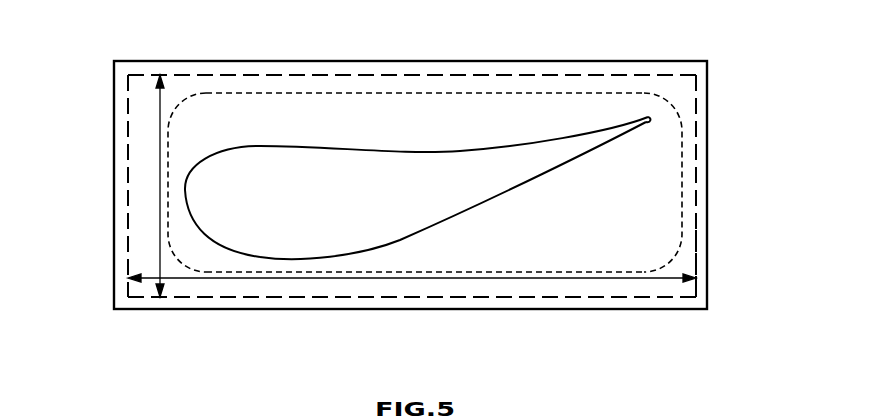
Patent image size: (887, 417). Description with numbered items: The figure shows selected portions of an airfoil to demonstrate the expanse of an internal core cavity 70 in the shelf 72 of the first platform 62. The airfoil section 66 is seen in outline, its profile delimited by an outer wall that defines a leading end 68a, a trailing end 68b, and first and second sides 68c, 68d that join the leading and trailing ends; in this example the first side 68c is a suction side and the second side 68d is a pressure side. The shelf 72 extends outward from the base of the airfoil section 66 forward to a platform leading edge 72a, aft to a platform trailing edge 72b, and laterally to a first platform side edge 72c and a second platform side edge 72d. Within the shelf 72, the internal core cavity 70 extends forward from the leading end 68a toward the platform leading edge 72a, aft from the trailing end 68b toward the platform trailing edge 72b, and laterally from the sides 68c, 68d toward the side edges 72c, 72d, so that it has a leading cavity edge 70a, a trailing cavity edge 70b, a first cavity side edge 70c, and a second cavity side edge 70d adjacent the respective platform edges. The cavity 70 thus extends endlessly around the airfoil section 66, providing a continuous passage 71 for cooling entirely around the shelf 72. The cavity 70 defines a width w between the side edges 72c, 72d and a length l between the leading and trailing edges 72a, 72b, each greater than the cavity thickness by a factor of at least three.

The first platform 62 is at (170, 309).
The airfoil section 66 is at (355, 234).
The leading end 68a is at (185, 190).
The trailing end 68b is at (648, 121).
The first side 68c is at (327, 258).
The second side 68d is at (337, 146).
The internal core cavity 70 is at (403, 187).
The leading cavity edge 70a is at (127, 107).
The trailing cavity edge 70b is at (696, 106).
The first cavity side edge 70c is at (525, 297).
The second cavity side edge 70d is at (520, 75).
The continuous passage 71 is at (690, 268).
The shelf 72 is at (405, 184).
The platform leading edge 72a is at (114, 183).
The platform trailing edge 72b is at (707, 222).
The first platform side edge 72c is at (438, 298).
The second platform side edge 72d is at (417, 61).
The width w is at (172, 104).
The length l is at (660, 278).